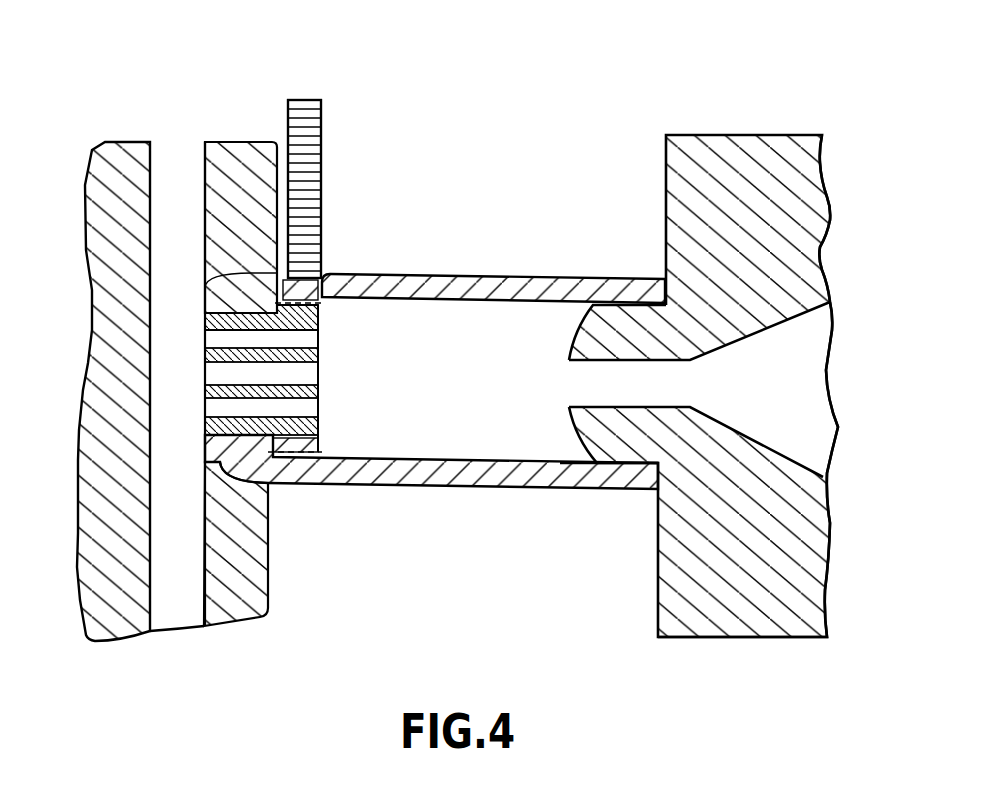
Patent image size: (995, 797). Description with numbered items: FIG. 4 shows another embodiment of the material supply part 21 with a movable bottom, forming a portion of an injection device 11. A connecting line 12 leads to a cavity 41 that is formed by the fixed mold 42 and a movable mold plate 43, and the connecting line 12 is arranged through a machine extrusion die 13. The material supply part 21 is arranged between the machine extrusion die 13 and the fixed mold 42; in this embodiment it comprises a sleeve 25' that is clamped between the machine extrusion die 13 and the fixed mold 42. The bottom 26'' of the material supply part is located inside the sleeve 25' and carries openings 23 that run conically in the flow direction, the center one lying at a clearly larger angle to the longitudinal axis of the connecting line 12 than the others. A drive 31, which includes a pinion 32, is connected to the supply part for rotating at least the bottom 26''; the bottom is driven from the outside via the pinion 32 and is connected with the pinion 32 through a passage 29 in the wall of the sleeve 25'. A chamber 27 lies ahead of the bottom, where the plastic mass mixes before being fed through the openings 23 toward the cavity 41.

The injection device 11 is at (890, 408).
The connecting line 12 is at (830, 318).
The machine extrusion die 13 is at (590, 465).
The material supply part 21 is at (337, 486).
The openings 23 is at (312, 376).
The sleeve 25' is at (493, 271).
The bottom 26'' is at (294, 321).
The chamber 27 is at (522, 432).
The passage 29 is at (323, 273).
The drive 31 is at (316, 78).
The pinion 32 is at (321, 150).
The cavity 41 is at (190, 150).
The fixed mold 42 is at (233, 145).
The movable mold plate 43 is at (107, 152).